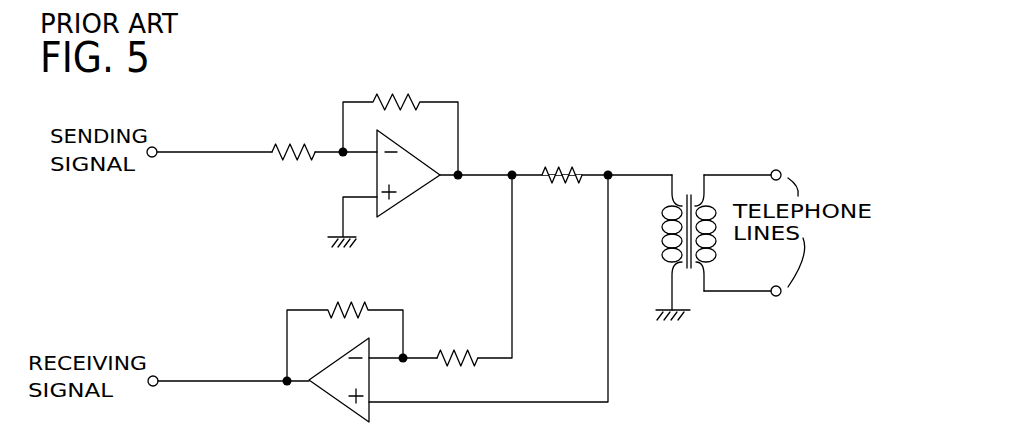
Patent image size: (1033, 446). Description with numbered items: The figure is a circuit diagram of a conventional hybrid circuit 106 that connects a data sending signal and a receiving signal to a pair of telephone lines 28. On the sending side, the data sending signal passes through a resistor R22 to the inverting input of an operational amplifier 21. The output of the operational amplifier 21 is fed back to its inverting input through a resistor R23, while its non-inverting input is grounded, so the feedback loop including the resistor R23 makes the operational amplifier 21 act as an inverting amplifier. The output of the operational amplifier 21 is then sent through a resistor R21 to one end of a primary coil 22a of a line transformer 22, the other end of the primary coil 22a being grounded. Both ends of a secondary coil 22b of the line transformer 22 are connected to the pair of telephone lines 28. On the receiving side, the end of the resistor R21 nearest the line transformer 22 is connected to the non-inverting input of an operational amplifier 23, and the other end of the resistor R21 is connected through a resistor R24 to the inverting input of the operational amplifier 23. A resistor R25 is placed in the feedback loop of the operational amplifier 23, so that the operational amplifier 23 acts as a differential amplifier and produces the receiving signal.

The hybrid circuit 106 is at (609, 115).
The operational amplifier 21 is at (413, 180).
The line transformer 22 is at (684, 178).
The primary coil 22a is at (665, 252).
The secondary coil 22b is at (715, 242).
The operational amplifier 23 is at (337, 387).
The telephone lines 28 is at (745, 175).
The resistor R21 is at (567, 155).
The resistor R22 is at (300, 135).
The resistor R23 is at (400, 116).
The resistor R24 is at (462, 339).
The resistor R25 is at (345, 324).